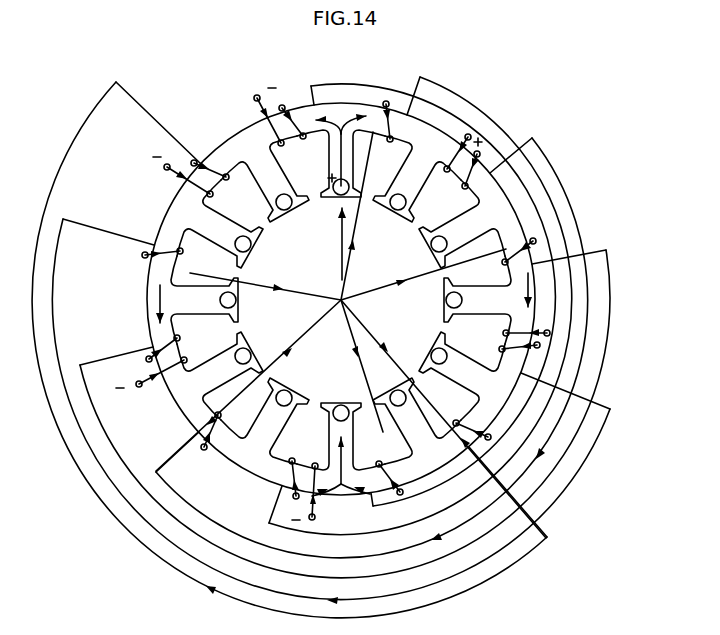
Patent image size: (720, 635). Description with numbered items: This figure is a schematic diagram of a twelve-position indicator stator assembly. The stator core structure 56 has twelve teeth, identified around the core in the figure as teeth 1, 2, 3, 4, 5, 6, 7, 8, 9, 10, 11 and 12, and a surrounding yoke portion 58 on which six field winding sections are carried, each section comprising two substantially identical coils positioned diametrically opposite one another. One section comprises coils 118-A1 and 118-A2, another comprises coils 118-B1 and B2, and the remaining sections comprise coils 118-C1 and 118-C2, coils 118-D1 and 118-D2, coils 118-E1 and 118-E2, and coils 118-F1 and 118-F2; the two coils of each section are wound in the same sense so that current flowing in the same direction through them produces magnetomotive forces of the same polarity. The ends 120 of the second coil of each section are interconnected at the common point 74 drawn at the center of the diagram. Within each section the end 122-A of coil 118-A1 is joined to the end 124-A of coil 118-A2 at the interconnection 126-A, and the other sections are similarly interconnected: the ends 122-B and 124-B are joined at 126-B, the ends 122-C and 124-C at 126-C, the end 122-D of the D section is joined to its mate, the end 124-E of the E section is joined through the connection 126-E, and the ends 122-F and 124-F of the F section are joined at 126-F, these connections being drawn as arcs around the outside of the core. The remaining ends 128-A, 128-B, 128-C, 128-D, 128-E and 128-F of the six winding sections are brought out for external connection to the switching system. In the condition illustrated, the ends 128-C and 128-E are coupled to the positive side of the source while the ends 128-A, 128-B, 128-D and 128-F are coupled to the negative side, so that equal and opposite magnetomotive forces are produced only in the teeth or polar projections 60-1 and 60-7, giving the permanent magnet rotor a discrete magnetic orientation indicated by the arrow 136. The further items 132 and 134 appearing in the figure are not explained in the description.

The stator core structure 56 is at (201, 136).
The yoke portion 58 is at (162, 213).
The tooth 60-1 is at (330, 200).
The tooth 60-7 is at (341, 402).
The coil end 120 is at (413, 179).
The common interconnection 74 is at (350, 292).
The arrow 136 is at (338, 257).
The yoke flux arrow 134 is at (157, 303).
The end connections 132 is at (533, 285).
The coil end 122-A is at (311, 90).
The interconnection 126-A is at (352, 82).
The coil end 124-A is at (371, 508).
The coil end 124-B is at (417, 78).
The interconnection 126-B is at (495, 120).
The coil end 122-B is at (270, 508).
The coil end 122-C is at (523, 138).
The interconnection 126-C is at (577, 207).
The coil end 124-C is at (172, 458).
The coil end 122-D is at (105, 358).
The coil end 124-E is at (108, 233).
The interconnection 126-E is at (596, 453).
The coil end 122-F is at (613, 410).
The coil end 124-F is at (549, 537).
The interconnection 126-F is at (521, 566).
The coil 118-A1 is at (300, 137).
The coil B2 is at (388, 132).
The coil 118-C1 is at (446, 172).
The coil 118-D2 is at (494, 257).
The coil 118-E1 is at (494, 337).
The coil 118-F2 is at (452, 423).
The coil 118-A2 is at (373, 465).
The coil 118-B1 is at (304, 467).
The coil 118-C2 is at (230, 421).
The coil 118-D1 is at (189, 341).
The coil 118-E2 is at (189, 257).
The coil 118-F1 is at (226, 184).
The winding section end 128-A is at (260, 101).
The winding section end 128-B is at (314, 523).
The winding section end 128-C is at (466, 132).
The winding section end 128-D is at (144, 393).
The winding section end 128-E is at (550, 330).
The winding section end 128-F is at (160, 172).
The tooth 1 is at (341, 187).
The tooth 2 is at (398, 202).
The tooth 3 is at (439, 244).
The tooth 4 is at (454, 300).
The tooth 5 is at (439, 356).
The tooth 6 is at (398, 398).
The tooth 7 is at (341, 413).
The tooth 8 is at (284, 398).
The tooth 9 is at (243, 356).
The tooth 10 is at (228, 300).
The tooth 11 is at (243, 244).
The tooth 12 is at (284, 202).